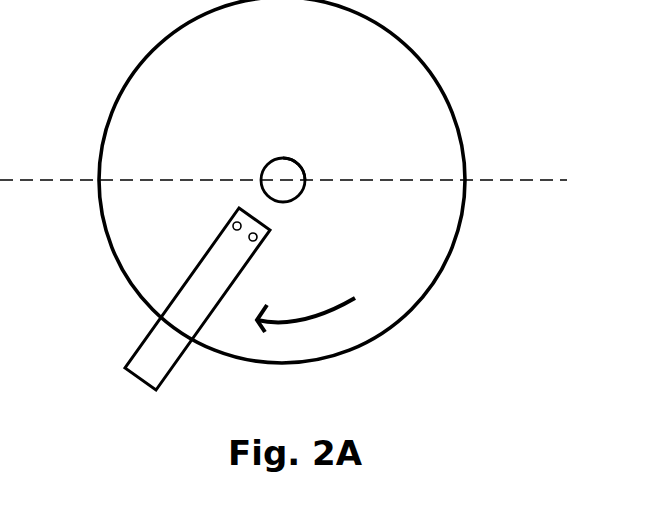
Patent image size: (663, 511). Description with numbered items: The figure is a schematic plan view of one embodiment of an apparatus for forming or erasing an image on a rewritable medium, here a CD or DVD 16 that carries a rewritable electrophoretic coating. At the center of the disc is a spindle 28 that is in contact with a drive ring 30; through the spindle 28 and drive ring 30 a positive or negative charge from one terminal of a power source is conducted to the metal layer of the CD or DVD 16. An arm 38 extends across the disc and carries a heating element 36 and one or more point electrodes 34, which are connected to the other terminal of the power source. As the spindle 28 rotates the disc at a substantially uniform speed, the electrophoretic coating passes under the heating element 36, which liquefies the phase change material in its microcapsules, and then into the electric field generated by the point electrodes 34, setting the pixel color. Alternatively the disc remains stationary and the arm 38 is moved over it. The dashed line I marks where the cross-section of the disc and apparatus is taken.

The line I is at (525, 180).
The CD or DVD 16 is at (249, 105).
The spindle 28 is at (278, 170).
The drive ring 30 is at (297, 158).
The point electrodes 34 is at (233, 221).
The heating element 36 is at (257, 242).
The arm 38 is at (135, 352).